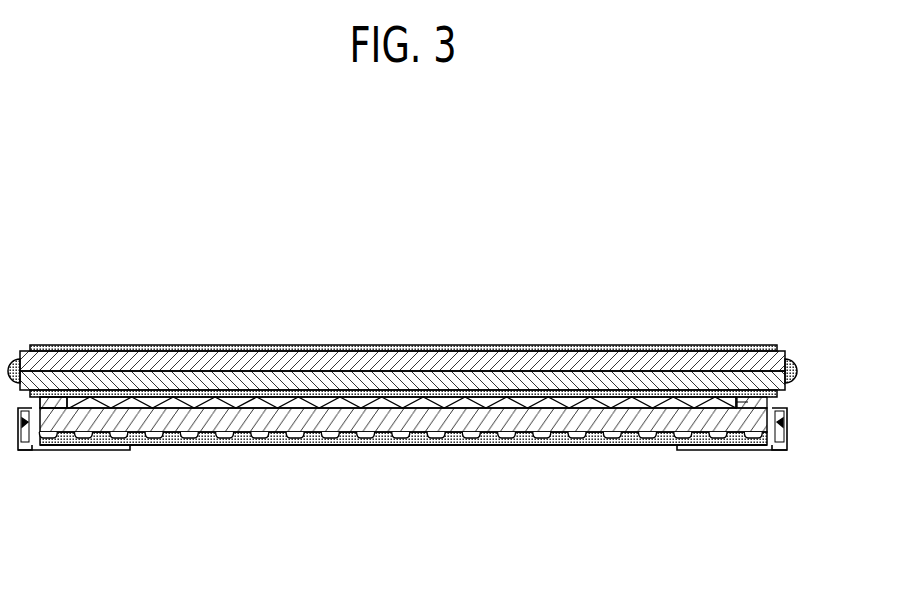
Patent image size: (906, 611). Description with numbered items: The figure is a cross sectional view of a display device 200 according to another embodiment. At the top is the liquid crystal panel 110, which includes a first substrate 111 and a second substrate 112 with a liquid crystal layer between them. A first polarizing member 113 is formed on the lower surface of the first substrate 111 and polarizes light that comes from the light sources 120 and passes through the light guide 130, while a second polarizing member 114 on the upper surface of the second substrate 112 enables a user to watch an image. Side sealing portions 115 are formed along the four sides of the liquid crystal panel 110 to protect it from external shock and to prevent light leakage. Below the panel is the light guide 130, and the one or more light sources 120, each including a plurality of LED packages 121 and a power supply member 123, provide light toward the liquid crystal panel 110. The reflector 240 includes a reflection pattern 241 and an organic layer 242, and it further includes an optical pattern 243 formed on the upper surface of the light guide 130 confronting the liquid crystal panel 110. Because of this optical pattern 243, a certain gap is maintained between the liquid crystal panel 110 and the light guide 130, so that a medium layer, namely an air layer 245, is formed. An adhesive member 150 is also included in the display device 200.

The display device 200 is at (78, 221).
The liquid crystal panel 110 is at (533, 272).
The first substrate 111 is at (365, 382).
The second substrate 112 is at (415, 363).
The first polarizing member 113 is at (468, 392).
The second polarizing member 114 is at (527, 347).
The side sealing portion 115 is at (798, 363).
The light source 120 is at (717, 520).
The LED package 121 is at (778, 448).
The power supply member 123 is at (723, 448).
The light guide 130 is at (282, 415).
The adhesive member 150 is at (737, 400).
The reflector 240 is at (513, 503).
The reflection pattern 241 is at (440, 438).
The organic layer 242 is at (527, 445).
The optical pattern 243 is at (386, 399).
The medium layer (air layer) 245 is at (322, 402).